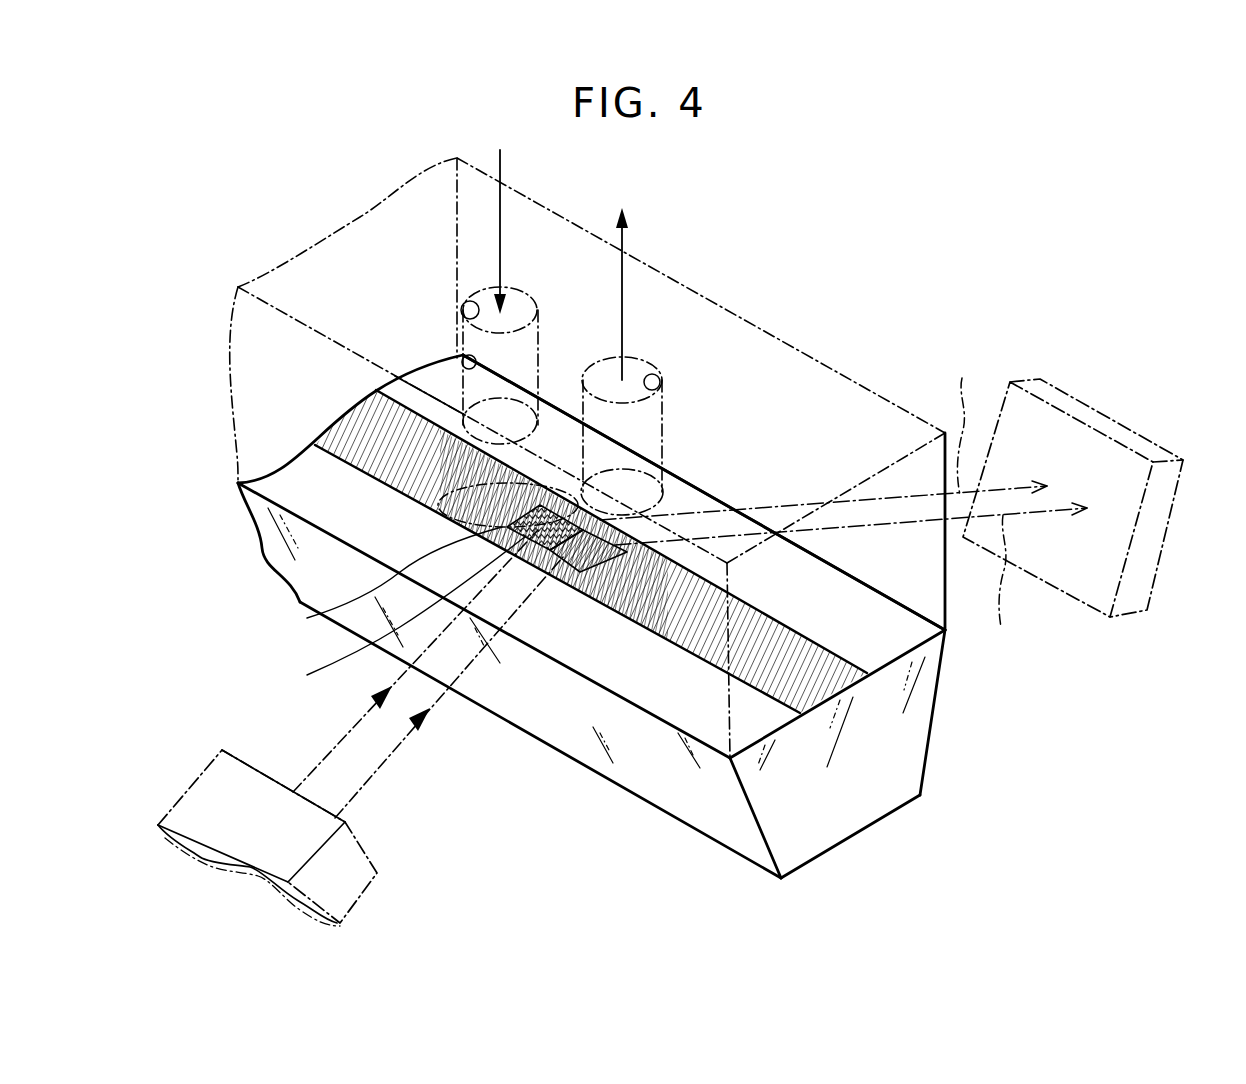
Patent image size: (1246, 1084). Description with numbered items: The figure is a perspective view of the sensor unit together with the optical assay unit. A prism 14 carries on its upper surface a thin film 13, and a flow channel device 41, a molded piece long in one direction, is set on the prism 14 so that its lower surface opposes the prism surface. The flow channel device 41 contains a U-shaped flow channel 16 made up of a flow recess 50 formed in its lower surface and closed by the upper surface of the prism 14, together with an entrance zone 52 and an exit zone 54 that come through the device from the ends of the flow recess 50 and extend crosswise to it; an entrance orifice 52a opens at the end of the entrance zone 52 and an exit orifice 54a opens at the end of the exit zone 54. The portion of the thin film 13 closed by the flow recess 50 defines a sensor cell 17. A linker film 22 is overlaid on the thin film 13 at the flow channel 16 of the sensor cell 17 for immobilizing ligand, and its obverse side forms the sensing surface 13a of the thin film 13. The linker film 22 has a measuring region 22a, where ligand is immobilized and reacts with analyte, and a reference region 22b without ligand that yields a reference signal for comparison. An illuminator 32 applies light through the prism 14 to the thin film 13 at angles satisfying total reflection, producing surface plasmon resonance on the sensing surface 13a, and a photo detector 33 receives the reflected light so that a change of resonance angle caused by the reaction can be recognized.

The thin film 13 is at (779, 620).
The sensing surface 13a is at (628, 580).
The prism 14 is at (928, 766).
The flow channel 16 is at (692, 401).
The sensor cell 17 is at (481, 500).
The linker film 22 is at (247, 608).
The measuring region 22a is at (376, 581).
The reference region 22b is at (388, 613).
The illuminator 32 is at (367, 867).
The photo detector 33 is at (1142, 606).
The flow channel device 41 is at (662, 265).
The flow recess 50 is at (577, 575).
The entrance zone 52 is at (460, 352).
The entrance orifice 52a is at (466, 298).
The exit zone 54 is at (660, 443).
The exit orifice 54a is at (655, 372).